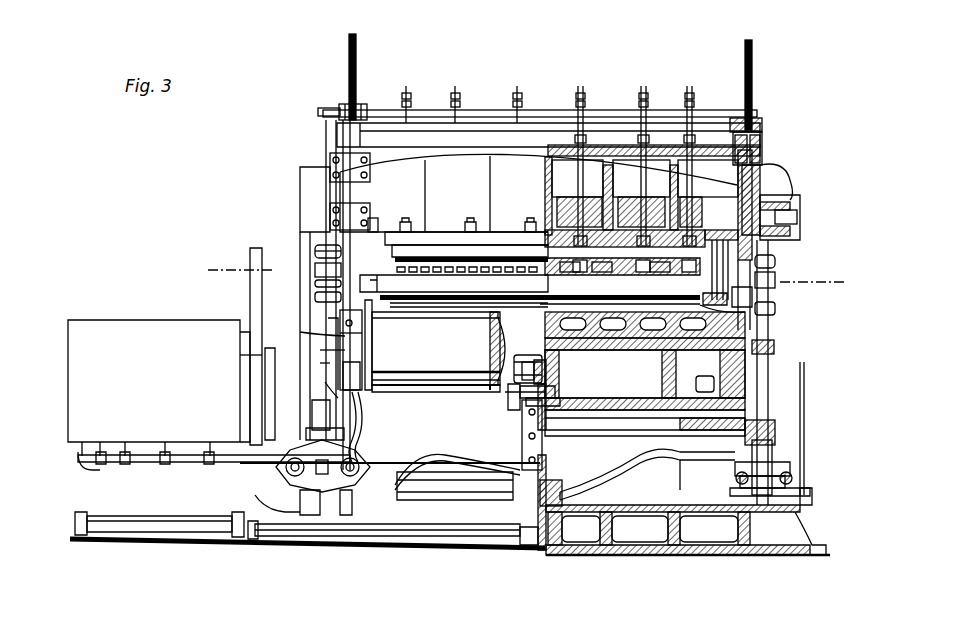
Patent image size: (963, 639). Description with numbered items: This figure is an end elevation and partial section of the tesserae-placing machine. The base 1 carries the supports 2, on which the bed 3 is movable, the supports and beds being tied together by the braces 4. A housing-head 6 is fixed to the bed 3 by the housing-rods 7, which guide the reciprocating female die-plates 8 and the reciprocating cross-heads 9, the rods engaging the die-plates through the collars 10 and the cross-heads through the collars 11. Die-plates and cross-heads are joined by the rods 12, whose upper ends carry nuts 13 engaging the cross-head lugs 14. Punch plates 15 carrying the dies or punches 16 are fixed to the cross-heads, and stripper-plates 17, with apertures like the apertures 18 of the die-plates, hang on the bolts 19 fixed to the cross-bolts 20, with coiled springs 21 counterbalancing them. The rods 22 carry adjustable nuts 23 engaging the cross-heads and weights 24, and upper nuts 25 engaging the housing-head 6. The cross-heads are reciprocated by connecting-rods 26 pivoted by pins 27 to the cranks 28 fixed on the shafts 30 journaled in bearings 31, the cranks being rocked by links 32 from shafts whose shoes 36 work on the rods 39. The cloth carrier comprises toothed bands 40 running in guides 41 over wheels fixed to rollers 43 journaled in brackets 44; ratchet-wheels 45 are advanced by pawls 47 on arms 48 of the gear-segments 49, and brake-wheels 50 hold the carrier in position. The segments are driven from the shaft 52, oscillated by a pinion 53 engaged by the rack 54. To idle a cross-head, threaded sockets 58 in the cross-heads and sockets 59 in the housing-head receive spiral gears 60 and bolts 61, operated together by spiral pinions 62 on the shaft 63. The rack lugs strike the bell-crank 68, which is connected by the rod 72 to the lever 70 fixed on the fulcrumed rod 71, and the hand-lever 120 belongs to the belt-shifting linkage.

The base 1 is at (582, 556).
The supports 2 is at (640, 410).
The bed 3 is at (632, 346).
The braces 4 is at (527, 276).
The housing-head 6 is at (608, 130).
The housing-rods 7 is at (315, 247).
The female die-plates 8 is at (798, 318).
The cross-heads 9 is at (474, 170).
The collars 10 is at (320, 302).
The collars 11 is at (345, 218).
The rods 12 is at (315, 268).
The nuts 13 is at (374, 220).
The cross-head lugs 14 is at (390, 232).
The male die or punch plates 15 is at (445, 245).
The dies or punches 16 is at (518, 250).
The stripper-plates 17 is at (400, 292).
The apertures 18 is at (664, 279).
The bolts 19 is at (410, 282).
The cross-bolts 20 is at (563, 279).
The coiled springs 21 is at (599, 279).
The rods 22 is at (455, 90).
The adjustable nuts 23 is at (548, 228).
The weights 24 is at (558, 196).
The adjustable nuts 25 is at (520, 90).
The connecting-rods 26 is at (315, 284).
The pins 27 is at (790, 210).
The cranks 28 is at (316, 436).
The shafts 30 is at (580, 438).
The bearings 31 is at (702, 452).
The links 32 is at (320, 412).
The shoes 36 is at (790, 466).
The rods 39 is at (792, 480).
The toothed bands 40 is at (380, 342).
The guides 41 is at (748, 332).
The rollers 43 is at (452, 392).
The brackets 44 is at (360, 392).
The ratchet-wheels 45 is at (375, 316).
The reciprocating pawls 47 is at (314, 336).
The arms 48 is at (330, 320).
The gear-segments 49 is at (321, 350).
The brake-wheels 50 is at (311, 364).
The shaft 52 is at (512, 400).
The pinion 53 is at (546, 364).
The rack 54 is at (556, 392).
The threaded sockets 58 is at (770, 166).
The threaded sockets 59 is at (763, 142).
The spiral gears 60 is at (762, 120).
The bolts 61 is at (357, 50).
The spiral pinions 62 is at (360, 104).
The shaft 63 is at (325, 108).
The bell-crank 68 is at (524, 440).
The lever 70 is at (534, 542).
The fulcrumed rod 71 is at (478, 536).
The rod 72 is at (540, 512).
The hand-lever 120 is at (265, 354).